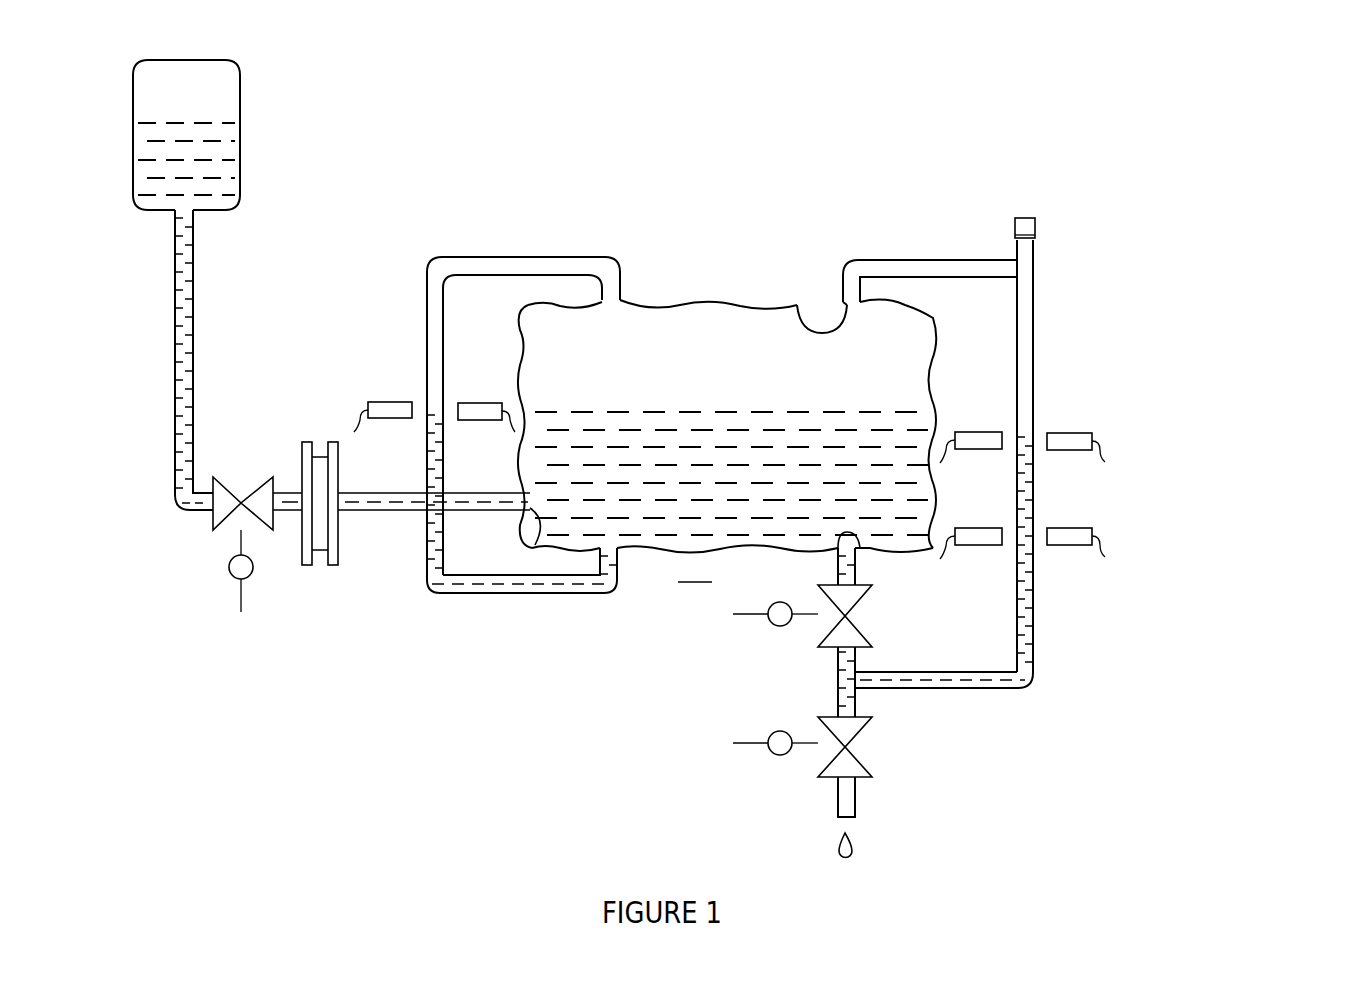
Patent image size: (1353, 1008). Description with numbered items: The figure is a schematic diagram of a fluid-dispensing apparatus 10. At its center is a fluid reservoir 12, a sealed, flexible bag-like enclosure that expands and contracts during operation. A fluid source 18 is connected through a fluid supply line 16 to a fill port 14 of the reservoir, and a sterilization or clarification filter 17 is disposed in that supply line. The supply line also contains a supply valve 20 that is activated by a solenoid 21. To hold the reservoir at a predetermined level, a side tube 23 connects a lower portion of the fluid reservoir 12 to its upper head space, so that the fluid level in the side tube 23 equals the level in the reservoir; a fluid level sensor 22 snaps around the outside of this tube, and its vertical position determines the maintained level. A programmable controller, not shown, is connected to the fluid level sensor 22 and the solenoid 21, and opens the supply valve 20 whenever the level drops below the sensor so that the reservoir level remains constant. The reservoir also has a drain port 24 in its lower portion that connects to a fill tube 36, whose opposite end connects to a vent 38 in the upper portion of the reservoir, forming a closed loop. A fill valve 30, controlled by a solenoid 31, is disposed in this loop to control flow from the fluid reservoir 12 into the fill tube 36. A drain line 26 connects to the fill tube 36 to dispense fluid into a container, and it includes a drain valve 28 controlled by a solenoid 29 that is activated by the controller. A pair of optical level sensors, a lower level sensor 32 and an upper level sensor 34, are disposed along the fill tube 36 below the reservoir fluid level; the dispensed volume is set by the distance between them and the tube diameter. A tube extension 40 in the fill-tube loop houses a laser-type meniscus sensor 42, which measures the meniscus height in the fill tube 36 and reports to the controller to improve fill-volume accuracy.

The dispensing apparatus 10 is at (918, 162).
The fluid reservoir 12 is at (690, 318).
The fill port 14 is at (545, 505).
The fluid supply line 16 is at (192, 333).
The sterilization or clarification filter 17 is at (338, 530).
The fluid source 18 is at (228, 92).
The supply valve 20 is at (262, 497).
The solenoid 21 is at (228, 562).
The fluid level sensor 22 is at (395, 410).
The side tube 23 is at (545, 262).
The drain port 24 is at (862, 532).
The drain line 26 is at (852, 797).
The drain valve 28 is at (850, 767).
The solenoid 29 is at (770, 753).
The fill valve 30 is at (858, 633).
The solenoid 31 is at (772, 625).
The lower level sensor 32 is at (1067, 540).
The upper level sensor 34 is at (1065, 438).
The fill tube 36 is at (1027, 655).
The vent 38 is at (797, 310).
The tube extension 40 is at (1030, 262).
The meniscus sensor 42 is at (1025, 217).